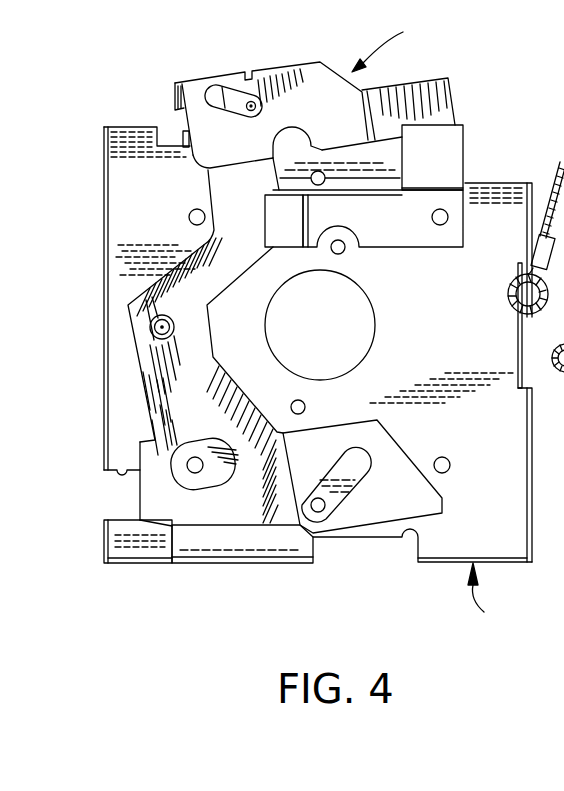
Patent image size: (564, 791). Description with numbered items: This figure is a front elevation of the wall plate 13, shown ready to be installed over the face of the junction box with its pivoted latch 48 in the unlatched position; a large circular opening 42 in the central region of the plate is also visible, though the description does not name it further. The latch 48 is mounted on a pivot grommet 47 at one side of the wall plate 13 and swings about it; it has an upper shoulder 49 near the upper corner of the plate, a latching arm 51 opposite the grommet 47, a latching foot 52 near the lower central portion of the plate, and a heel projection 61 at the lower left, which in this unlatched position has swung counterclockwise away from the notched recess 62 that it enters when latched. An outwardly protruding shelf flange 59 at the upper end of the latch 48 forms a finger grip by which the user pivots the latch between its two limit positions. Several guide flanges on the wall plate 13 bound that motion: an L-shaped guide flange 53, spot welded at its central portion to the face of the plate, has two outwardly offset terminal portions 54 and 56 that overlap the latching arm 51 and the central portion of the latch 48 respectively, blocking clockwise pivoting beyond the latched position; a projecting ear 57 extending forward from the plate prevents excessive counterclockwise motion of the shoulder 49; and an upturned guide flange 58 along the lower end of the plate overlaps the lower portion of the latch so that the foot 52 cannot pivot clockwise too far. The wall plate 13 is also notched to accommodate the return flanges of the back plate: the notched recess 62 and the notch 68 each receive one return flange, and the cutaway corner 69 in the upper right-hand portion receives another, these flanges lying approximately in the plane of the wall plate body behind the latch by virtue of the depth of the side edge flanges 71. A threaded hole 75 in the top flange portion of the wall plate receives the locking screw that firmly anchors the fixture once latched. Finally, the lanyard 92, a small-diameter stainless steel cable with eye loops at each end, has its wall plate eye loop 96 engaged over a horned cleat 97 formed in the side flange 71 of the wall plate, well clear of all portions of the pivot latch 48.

The wall plate 13 is at (488, 598).
The circular opening 42 is at (369, 303).
The pivot grommet 47 is at (174, 325).
The pivoted latch 48 is at (389, 40).
The upper shoulder 49 is at (203, 148).
The latching arm 51 is at (444, 107).
The latching foot 52 is at (436, 500).
The L-shaped guide flange 53 is at (404, 240).
The outwardly offset terminal portion 54 is at (415, 170).
The outwardly offset terminal portion 56 is at (270, 224).
The projecting ear 57 is at (184, 137).
The upturned guide flange 58 is at (216, 560).
The shelf flange 59 is at (292, 63).
The heel projection 61 is at (162, 512).
The notched recess 62 is at (123, 467).
The notch 68 is at (418, 541).
The cutaway corner 69 is at (498, 183).
The side edge flanges 71 is at (112, 228).
The threaded hole 75 is at (248, 100).
The lanyard 92 is at (546, 202).
The wall plate eye loop 96 is at (515, 280).
The horned cleat 97 is at (525, 330).